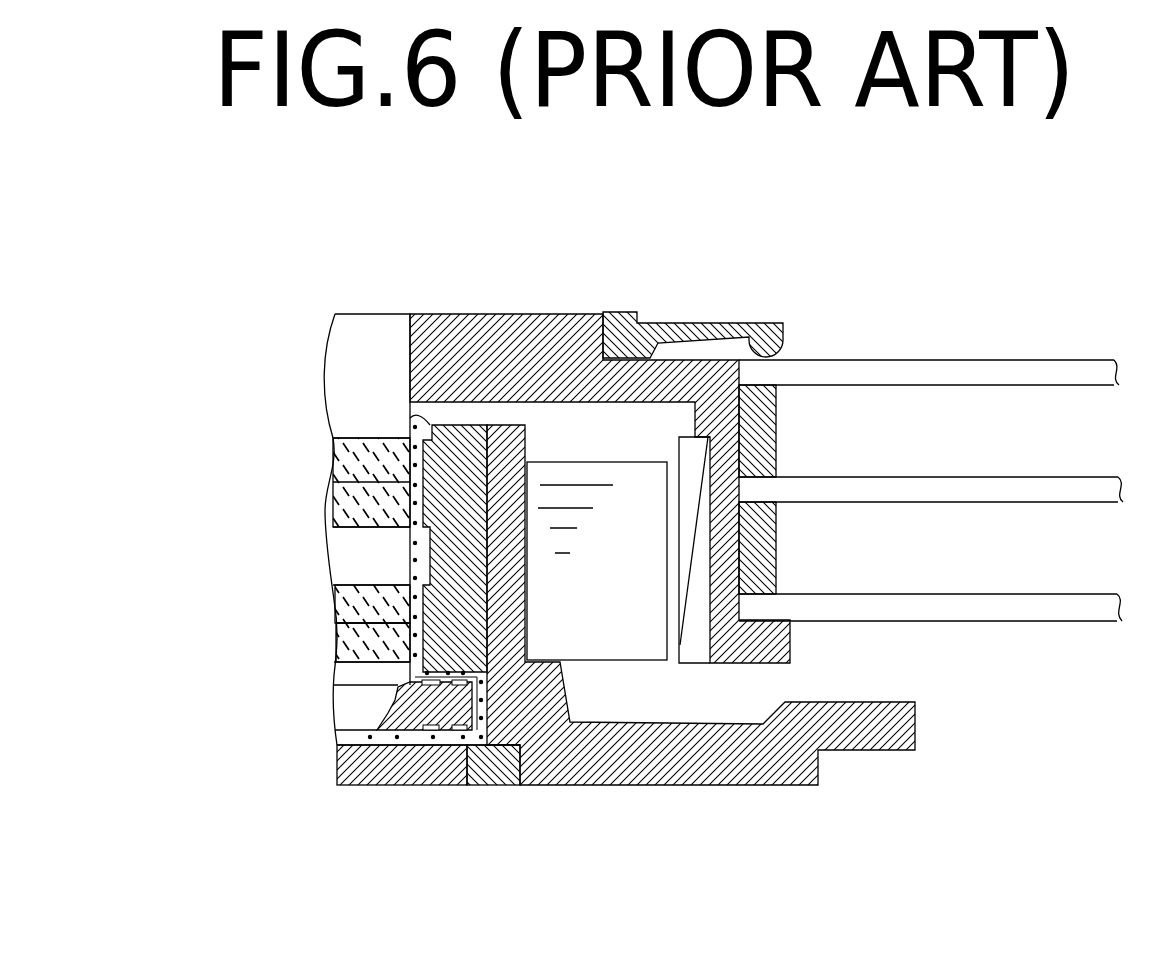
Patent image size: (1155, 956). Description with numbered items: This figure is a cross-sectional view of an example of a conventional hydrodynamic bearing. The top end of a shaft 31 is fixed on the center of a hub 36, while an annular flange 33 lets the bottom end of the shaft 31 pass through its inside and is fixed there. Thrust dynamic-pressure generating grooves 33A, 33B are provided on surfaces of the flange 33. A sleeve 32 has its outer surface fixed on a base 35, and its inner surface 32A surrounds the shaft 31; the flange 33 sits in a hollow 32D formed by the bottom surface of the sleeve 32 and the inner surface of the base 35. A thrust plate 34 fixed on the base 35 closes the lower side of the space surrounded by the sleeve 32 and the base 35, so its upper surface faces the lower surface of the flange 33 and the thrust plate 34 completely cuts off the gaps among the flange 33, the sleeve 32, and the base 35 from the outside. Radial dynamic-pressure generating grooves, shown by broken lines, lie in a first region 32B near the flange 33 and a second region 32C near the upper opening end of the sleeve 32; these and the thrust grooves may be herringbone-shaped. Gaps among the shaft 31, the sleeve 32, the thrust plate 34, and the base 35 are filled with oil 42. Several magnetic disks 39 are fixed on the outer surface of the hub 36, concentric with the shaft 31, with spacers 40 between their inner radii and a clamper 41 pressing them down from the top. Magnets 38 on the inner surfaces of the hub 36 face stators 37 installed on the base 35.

The shaft 31 is at (362, 355).
The sleeve 32 is at (455, 457).
The inner surface of the sleeve 32A is at (385, 658).
The first region 32B is at (368, 626).
The second region 32C is at (375, 500).
The hollow 32D is at (520, 733).
The flange 33 is at (367, 707).
The thrust dynamic-pressure generating groove 33A is at (423, 743).
The thrust dynamic-pressure generating groove 33B is at (473, 740).
The thrust plate 34 is at (363, 763).
The base 35 is at (770, 753).
The hub 36 is at (497, 345).
The stator 37 is at (590, 597).
The magnet 38 is at (697, 600).
The magnetic disk 39 is at (988, 370).
The spacer 40 is at (755, 437).
The clamper 41 is at (773, 340).
The oil 42 is at (410, 568).